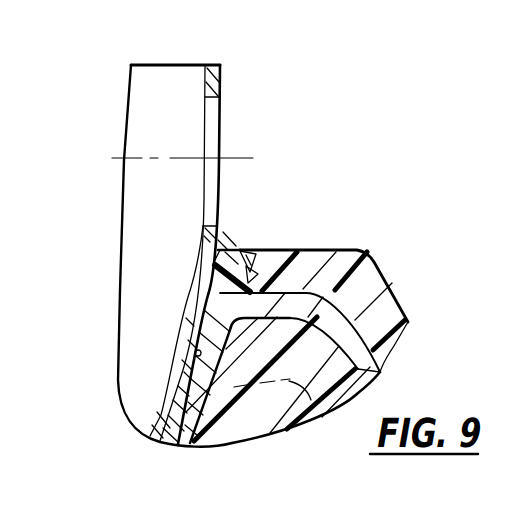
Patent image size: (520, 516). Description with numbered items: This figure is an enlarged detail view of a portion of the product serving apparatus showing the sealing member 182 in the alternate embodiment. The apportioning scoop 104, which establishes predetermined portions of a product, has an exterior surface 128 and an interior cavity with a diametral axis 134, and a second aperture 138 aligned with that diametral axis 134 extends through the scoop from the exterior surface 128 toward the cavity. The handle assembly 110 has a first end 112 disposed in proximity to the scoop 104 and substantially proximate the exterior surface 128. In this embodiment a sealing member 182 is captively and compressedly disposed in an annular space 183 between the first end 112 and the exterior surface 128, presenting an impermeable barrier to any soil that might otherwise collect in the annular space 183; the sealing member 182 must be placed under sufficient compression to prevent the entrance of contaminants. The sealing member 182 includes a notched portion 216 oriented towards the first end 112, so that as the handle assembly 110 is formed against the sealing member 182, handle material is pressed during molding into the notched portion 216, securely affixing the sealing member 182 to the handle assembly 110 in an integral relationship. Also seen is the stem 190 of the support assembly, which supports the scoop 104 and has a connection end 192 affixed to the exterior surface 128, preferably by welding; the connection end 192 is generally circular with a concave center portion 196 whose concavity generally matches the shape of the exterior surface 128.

The apportioning scoop 104 is at (181, 64).
The second aperture 138 is at (222, 97).
The diametral axis 134 is at (233, 157).
The annular space 183 is at (229, 249).
The sealing member 182 is at (241, 250).
The notched portion 216 is at (252, 250).
The first end 112 is at (358, 250).
The handle assembly 110 is at (393, 273).
The exterior surface 128 is at (194, 351).
The concave center portion 196 is at (170, 380).
The stem 190 is at (392, 370).
The connection end 192 is at (236, 440).